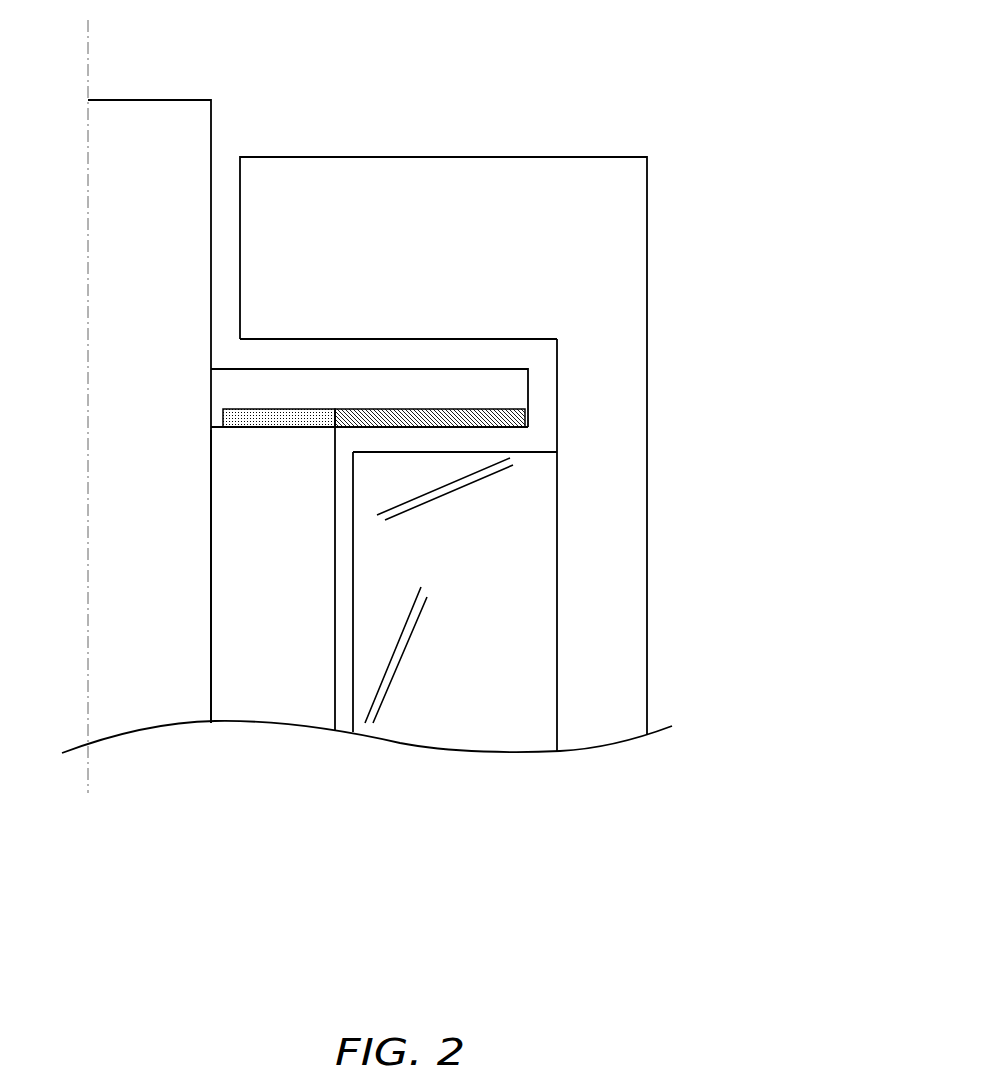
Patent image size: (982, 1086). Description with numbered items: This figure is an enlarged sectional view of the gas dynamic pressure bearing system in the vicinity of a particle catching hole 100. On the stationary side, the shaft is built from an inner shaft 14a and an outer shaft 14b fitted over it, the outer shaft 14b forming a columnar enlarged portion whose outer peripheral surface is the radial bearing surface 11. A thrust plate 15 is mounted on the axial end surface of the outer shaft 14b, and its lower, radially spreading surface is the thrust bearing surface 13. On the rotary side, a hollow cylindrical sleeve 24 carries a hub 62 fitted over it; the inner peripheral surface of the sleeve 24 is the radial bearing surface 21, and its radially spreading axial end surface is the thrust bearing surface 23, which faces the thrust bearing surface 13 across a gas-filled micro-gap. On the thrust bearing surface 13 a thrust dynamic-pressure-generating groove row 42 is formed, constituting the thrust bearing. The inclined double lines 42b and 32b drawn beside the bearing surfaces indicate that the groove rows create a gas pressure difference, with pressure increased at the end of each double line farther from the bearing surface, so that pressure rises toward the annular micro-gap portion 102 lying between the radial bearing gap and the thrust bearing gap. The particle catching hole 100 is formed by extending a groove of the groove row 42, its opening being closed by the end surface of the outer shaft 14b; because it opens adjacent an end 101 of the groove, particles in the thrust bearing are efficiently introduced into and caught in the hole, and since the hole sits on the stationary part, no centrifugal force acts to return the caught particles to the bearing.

The annular micro-gap portion 102 is at (347, 440).
The thrust plate 15 is at (253, 373).
The hub 62 is at (577, 216).
The particle catching hole 100 is at (277, 417).
The end of thrust dynamic-pressure-generating groove 101 is at (343, 403).
The thrust dynamic-pressure-generating groove row 42 is at (435, 413).
The thrust bearing surface 13 is at (495, 434).
The thrust bearing surface 23 is at (493, 448).
The double lines 42b is at (482, 495).
The sleeve 24 is at (503, 615).
The double lines 32b is at (420, 673).
The inner shaft 14a is at (142, 692).
The outer shaft 14b is at (267, 690).
The radial bearing surface 11 is at (340, 703).
The radial bearing surface 21 is at (347, 703).